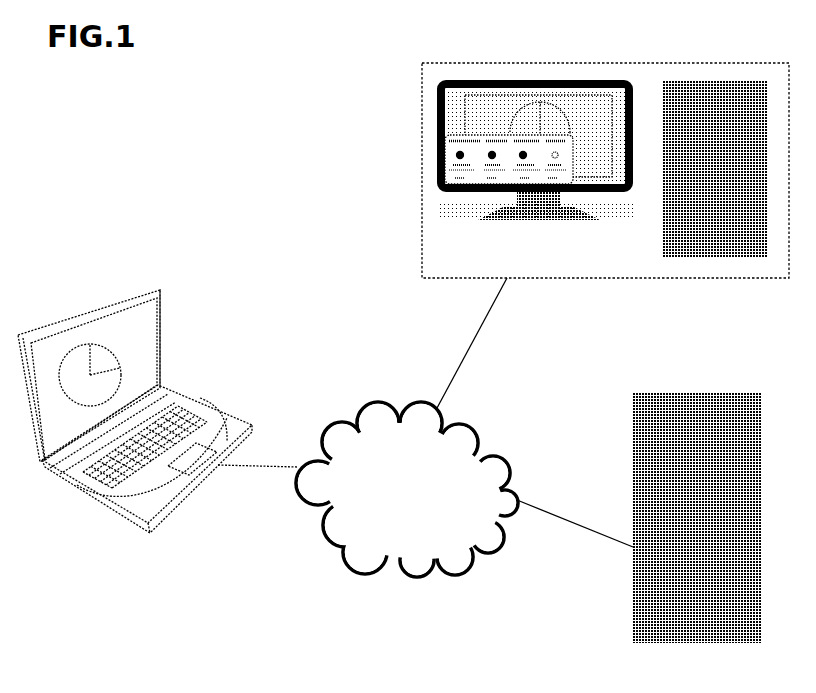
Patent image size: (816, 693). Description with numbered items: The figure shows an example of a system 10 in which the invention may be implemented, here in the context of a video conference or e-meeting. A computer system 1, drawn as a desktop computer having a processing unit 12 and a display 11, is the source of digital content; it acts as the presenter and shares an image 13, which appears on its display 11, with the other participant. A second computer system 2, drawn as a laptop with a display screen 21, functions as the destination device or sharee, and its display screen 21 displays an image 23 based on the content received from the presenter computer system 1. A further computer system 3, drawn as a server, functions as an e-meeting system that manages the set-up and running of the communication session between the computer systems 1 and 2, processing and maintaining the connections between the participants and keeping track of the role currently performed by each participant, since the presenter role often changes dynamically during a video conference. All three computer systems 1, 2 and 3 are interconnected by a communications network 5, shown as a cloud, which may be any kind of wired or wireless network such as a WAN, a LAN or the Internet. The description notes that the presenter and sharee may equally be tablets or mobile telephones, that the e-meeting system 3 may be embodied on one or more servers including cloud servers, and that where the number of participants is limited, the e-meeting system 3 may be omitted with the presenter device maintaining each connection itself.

The computer system 1 is at (582, 63).
The computer system 2 is at (132, 393).
The computer system 3 is at (700, 493).
The network 5 is at (413, 497).
The system 10 is at (312, 172).
The display 11 is at (605, 194).
The processing unit 12 is at (730, 162).
The image 13 is at (517, 110).
The display screen 21 is at (143, 355).
The image 23 is at (75, 378).